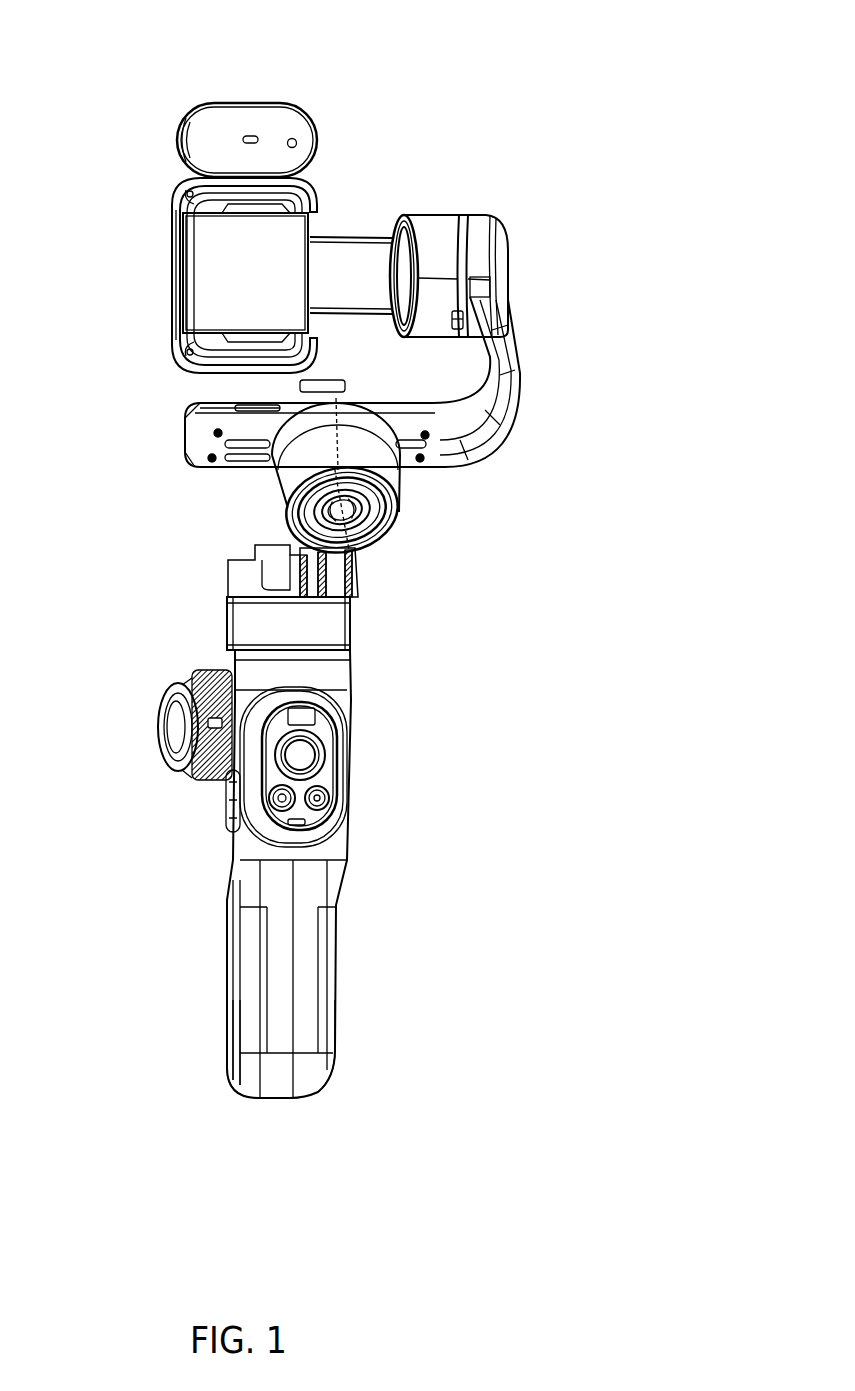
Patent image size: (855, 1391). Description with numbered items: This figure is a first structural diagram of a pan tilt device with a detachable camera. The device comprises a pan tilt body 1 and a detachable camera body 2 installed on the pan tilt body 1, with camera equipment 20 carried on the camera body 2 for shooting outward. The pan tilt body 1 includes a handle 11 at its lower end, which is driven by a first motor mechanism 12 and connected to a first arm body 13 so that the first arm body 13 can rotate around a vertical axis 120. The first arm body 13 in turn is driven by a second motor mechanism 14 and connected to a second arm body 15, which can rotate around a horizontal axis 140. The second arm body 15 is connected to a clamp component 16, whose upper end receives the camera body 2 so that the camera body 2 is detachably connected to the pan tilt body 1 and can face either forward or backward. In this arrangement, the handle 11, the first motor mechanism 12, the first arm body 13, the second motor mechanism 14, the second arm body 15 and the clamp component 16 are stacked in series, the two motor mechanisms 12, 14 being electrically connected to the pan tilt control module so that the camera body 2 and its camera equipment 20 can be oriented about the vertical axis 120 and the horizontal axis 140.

The pan tilt body 1 is at (280, 948).
The handle 11 is at (280, 948).
The first motor mechanism 12 is at (272, 623).
The vertical axis 120 is at (232, 600).
The first arm body 13 is at (505, 430).
The second motor mechanism 14 is at (483, 245).
The horizontal axis 140 is at (461, 218).
The second arm body 15 is at (355, 260).
The clamp component 16 is at (222, 283).
The camera body 2 is at (193, 110).
The camera equipment 20 is at (255, 139).